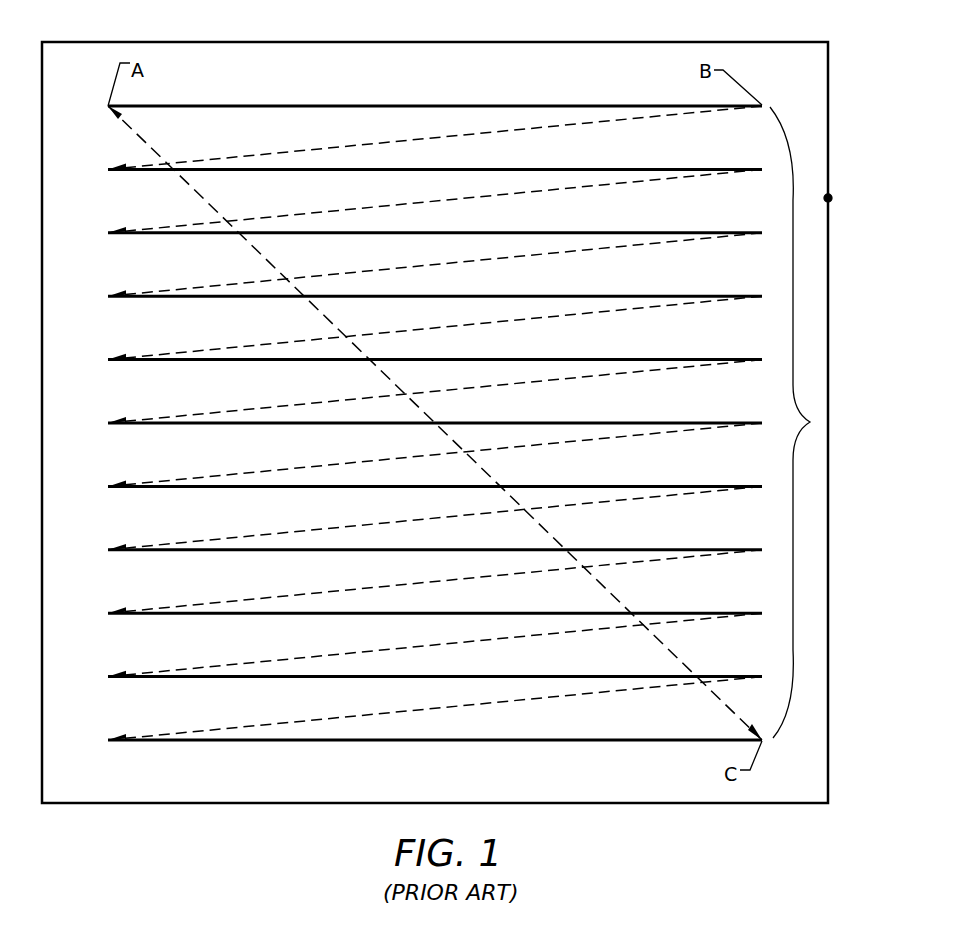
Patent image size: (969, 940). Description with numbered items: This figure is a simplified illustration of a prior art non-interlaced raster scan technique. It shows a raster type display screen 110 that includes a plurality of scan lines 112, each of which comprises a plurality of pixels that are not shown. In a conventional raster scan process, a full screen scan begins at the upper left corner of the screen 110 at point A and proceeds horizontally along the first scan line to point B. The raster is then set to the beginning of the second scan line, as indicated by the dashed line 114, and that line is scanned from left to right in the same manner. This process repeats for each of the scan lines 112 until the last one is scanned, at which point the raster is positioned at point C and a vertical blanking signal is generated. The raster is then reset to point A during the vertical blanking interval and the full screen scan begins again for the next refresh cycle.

The raster type display screen 110 is at (272, 42).
The scan lines 112 is at (810, 422).
The dashed line 114 is at (258, 152).